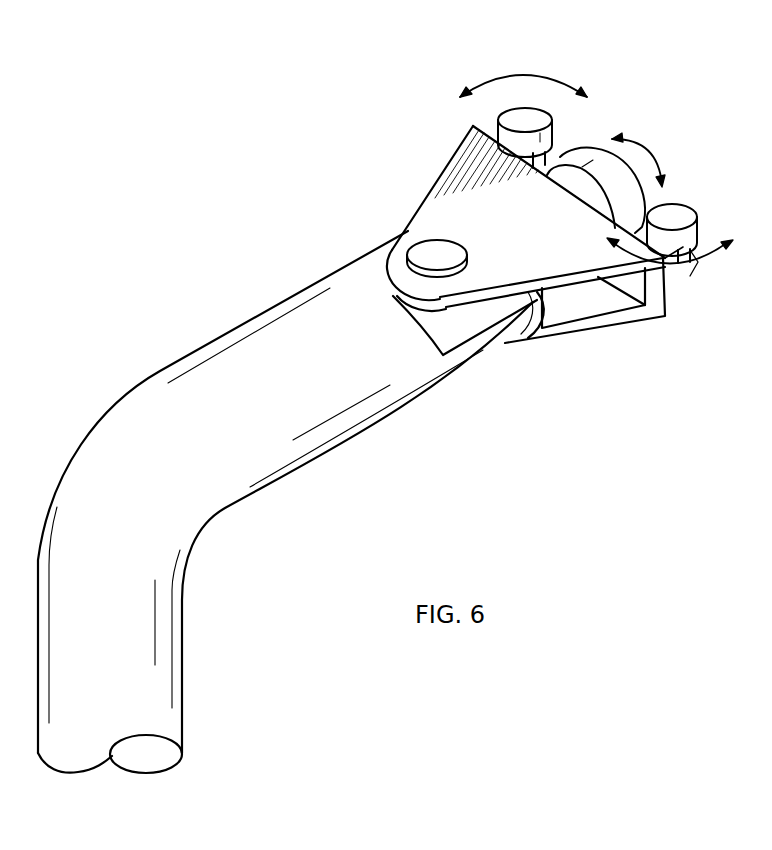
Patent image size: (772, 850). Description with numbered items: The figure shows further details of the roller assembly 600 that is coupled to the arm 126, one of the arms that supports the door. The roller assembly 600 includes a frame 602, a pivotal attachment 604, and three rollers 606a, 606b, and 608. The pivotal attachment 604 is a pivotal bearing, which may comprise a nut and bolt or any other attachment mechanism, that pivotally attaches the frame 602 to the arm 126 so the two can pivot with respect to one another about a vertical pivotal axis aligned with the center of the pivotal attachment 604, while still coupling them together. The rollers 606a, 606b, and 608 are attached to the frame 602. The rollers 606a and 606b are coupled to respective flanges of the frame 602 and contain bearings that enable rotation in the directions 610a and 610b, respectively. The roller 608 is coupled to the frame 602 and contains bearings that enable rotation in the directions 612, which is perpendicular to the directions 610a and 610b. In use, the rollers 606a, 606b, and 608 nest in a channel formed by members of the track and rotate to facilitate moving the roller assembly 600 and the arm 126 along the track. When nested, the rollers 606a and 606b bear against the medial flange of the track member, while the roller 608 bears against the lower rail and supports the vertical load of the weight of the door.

The arm 126 is at (240, 327).
The roller assembly 600 is at (425, 150).
The frame 602 is at (590, 327).
The pivotal attachment 604 is at (433, 238).
The roller 606a is at (527, 108).
The roller 606b is at (713, 183).
The roller 608 is at (580, 157).
The directions 610a is at (505, 75).
The directions 610b is at (700, 260).
The directions 612 is at (652, 150).